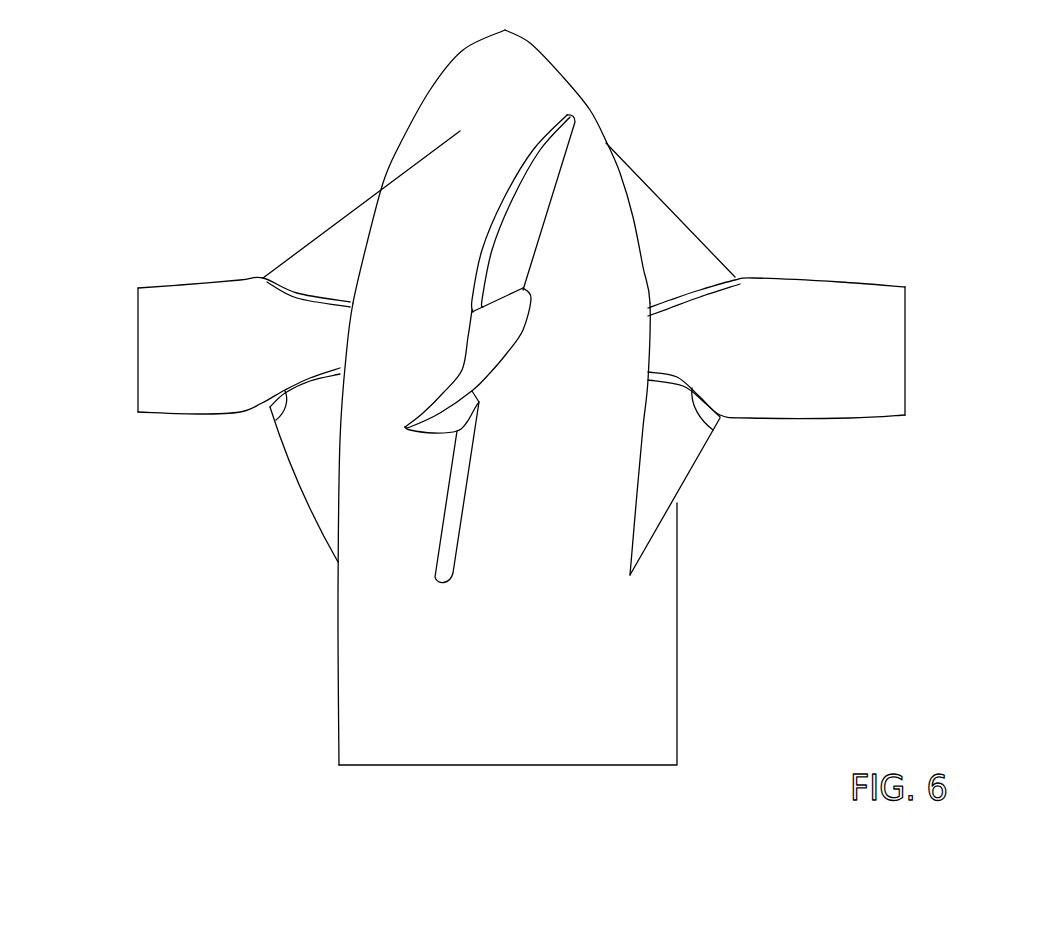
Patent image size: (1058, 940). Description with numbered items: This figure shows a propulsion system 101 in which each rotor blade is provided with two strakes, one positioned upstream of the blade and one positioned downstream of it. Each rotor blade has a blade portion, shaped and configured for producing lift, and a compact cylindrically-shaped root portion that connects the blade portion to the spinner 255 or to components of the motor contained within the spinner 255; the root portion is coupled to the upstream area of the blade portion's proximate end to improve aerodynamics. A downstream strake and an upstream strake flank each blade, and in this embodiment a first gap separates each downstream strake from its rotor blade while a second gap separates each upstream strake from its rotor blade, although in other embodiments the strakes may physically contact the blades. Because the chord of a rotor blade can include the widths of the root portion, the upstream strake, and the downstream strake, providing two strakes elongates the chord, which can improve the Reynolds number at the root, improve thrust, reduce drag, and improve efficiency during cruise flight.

The propulsion system 101 is at (702, 575).
The spinner 255 is at (462, 79).